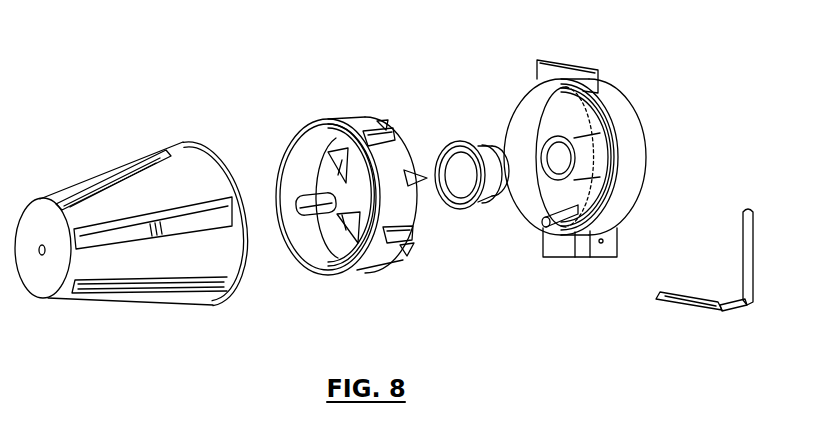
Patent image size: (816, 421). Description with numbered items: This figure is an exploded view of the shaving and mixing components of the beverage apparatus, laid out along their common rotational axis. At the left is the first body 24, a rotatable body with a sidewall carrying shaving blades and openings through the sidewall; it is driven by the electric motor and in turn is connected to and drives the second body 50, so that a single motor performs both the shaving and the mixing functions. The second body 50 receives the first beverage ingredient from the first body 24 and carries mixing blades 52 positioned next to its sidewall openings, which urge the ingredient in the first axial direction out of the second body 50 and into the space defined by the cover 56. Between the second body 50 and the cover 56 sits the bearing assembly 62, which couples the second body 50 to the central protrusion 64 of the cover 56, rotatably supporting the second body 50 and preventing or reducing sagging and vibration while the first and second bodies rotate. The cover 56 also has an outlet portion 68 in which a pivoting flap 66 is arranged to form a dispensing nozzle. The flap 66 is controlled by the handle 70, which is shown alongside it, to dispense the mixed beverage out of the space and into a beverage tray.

The first body 24 is at (57, 180).
The second body 50 is at (304, 114).
The mixing blades 52 is at (316, 214).
The bearing assembly 62 is at (436, 142).
The cover 56 is at (632, 90).
The central protrusion 64 is at (588, 145).
The outlet portion 68 is at (603, 249).
The pivoting flap 66 is at (693, 291).
The handle 70 is at (740, 227).